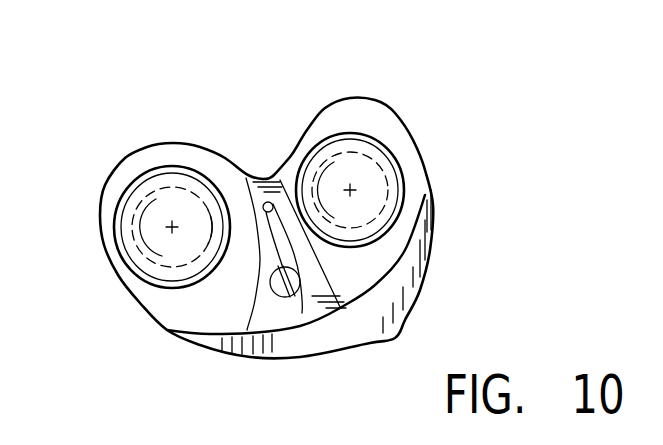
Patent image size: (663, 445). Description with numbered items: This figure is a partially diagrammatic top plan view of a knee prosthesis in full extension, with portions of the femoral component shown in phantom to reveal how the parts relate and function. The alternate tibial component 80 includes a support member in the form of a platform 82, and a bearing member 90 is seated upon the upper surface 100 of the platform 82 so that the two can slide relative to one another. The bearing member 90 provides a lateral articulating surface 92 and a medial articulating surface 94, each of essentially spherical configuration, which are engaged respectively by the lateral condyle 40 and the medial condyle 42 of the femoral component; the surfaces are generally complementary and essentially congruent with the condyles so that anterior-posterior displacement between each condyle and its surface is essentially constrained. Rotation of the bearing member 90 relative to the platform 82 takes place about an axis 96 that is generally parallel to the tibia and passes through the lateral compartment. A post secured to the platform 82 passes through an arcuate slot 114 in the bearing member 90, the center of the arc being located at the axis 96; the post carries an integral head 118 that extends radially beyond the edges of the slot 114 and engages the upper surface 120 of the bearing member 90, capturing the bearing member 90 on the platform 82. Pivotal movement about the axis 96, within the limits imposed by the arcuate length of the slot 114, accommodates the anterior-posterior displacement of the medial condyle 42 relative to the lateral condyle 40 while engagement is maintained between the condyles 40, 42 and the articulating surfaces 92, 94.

The lateral condyle 40 is at (163, 190).
The medial condyle 42 is at (378, 160).
The tibial component 80 is at (442, 240).
The platform 82 is at (410, 312).
The bearing member 90 is at (412, 208).
The lateral articulating surface 92 is at (120, 228).
The medial articulating surface 94 is at (380, 158).
The axis 96 is at (170, 228).
The upper surface 100 is at (415, 270).
The arcuate slot 114 is at (265, 202).
The head 118 is at (297, 300).
The upper surface 120 is at (318, 305).